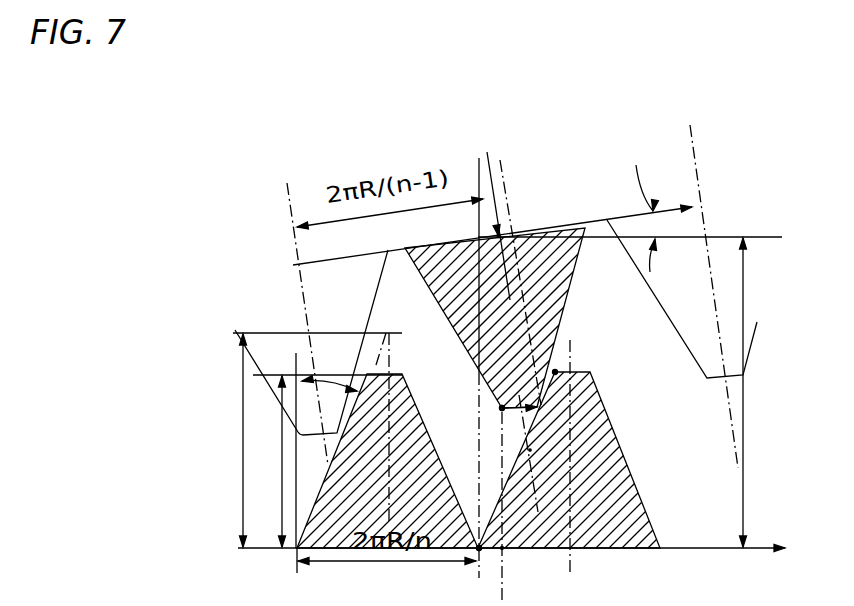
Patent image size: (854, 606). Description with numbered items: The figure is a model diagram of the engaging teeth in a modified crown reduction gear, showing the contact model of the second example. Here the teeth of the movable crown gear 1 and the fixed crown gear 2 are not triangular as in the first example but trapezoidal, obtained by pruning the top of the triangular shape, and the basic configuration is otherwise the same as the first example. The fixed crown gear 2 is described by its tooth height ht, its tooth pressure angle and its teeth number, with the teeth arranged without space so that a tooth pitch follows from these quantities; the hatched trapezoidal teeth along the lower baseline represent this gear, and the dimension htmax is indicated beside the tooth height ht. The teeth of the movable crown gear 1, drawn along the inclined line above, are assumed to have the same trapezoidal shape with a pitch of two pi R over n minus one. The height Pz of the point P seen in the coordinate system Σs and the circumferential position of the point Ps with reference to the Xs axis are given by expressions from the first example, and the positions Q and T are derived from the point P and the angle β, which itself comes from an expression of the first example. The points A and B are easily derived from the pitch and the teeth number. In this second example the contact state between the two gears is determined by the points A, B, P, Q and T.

The movable crown gear 1 is at (236, 265).
The fixed crown gear 2 is at (221, 510).
The maximum tooth height dimension htmax is at (206, 440).
The tooth height ht is at (270, 461).
The height of point P Pz is at (760, 392).
The point P is at (511, 218).
The point B is at (573, 335).
The position T is at (490, 412).
The position Q is at (543, 436).
The point A is at (464, 536).
The point Ps is at (516, 564).